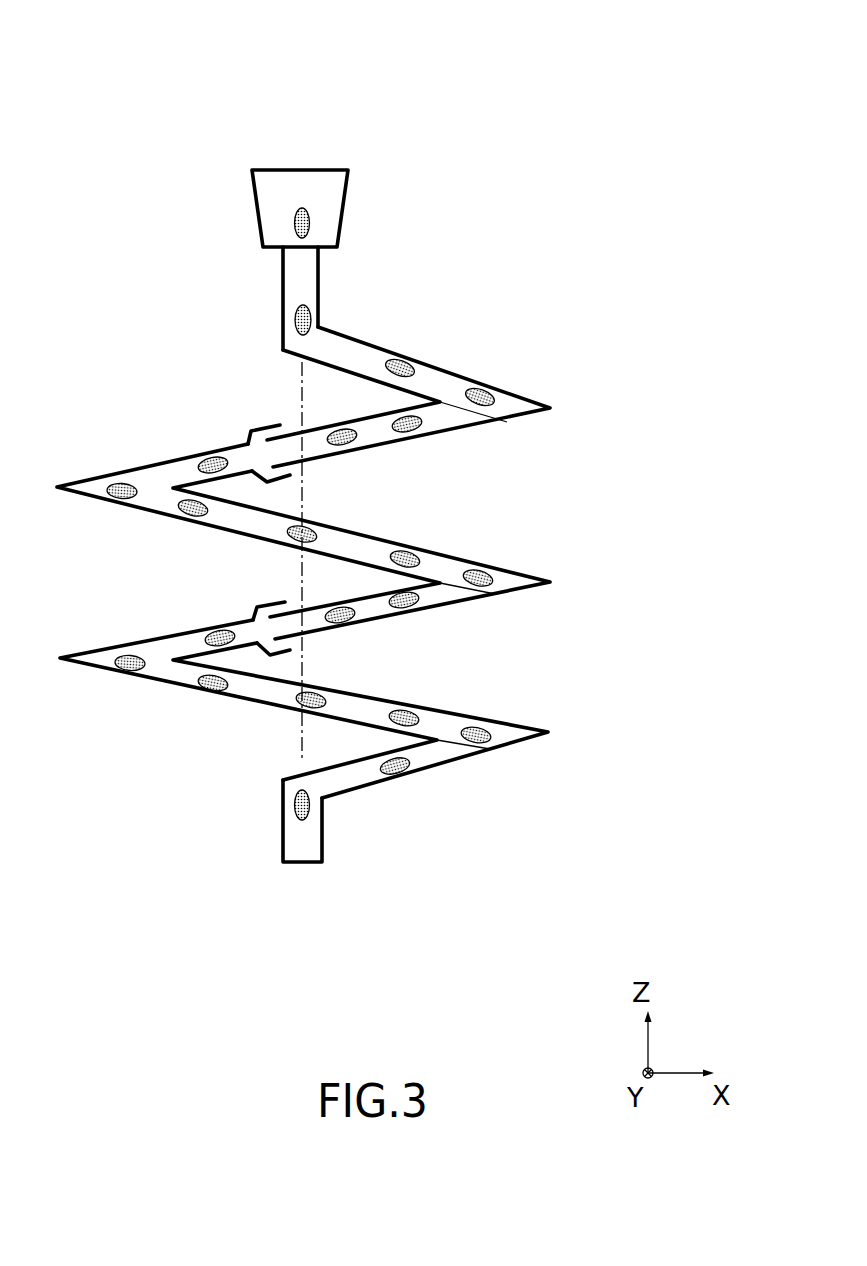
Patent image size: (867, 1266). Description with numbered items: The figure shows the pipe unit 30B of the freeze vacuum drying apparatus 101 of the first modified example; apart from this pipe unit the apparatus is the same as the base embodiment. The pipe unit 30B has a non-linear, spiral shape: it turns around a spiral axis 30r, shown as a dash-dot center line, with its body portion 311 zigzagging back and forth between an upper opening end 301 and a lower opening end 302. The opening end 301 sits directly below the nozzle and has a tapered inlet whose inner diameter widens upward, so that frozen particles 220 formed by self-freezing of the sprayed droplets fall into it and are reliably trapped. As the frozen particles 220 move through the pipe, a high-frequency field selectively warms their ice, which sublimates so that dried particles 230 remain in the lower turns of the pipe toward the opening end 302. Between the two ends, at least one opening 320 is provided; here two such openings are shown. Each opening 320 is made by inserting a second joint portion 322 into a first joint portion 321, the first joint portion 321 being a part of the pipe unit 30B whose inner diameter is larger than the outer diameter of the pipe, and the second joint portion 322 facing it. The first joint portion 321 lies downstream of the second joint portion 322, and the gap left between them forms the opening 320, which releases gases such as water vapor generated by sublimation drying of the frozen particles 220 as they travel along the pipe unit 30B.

The freeze vacuum drying apparatus 101 is at (581, 130).
The pipe unit 30B is at (703, 325).
The opening end 301 is at (332, 168).
The bent strip portion 311 is at (417, 358).
The opening end 302 is at (312, 866).
The spiral axis 30r is at (302, 388).
The opening 320 is at (277, 423).
The first joint portion 321 is at (280, 425).
The second joint portion 322 is at (290, 432).
The frozen particles 220 is at (203, 464).
The dried particles 230 is at (210, 692).